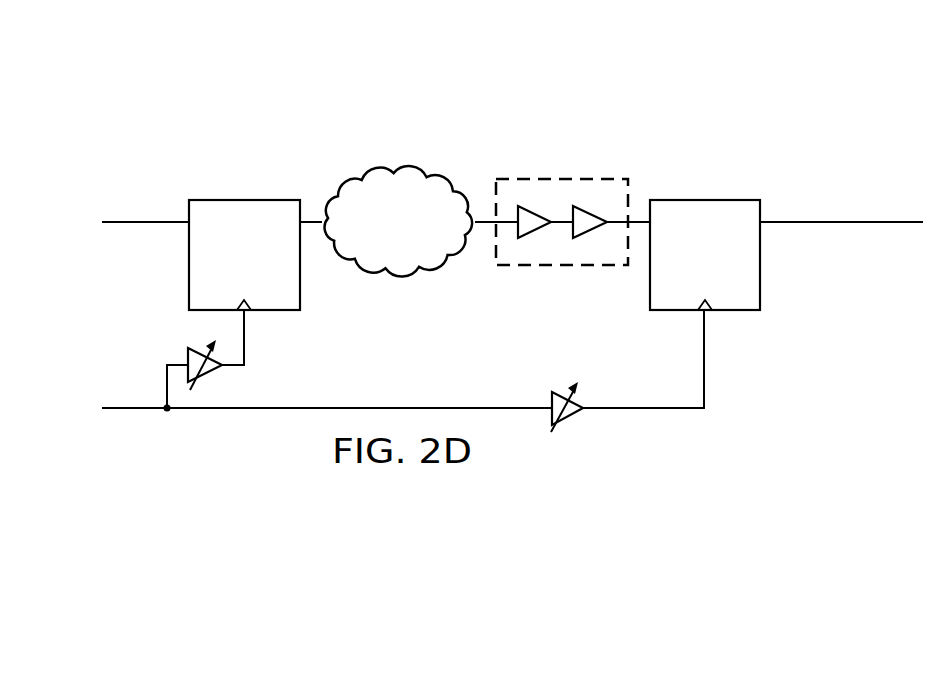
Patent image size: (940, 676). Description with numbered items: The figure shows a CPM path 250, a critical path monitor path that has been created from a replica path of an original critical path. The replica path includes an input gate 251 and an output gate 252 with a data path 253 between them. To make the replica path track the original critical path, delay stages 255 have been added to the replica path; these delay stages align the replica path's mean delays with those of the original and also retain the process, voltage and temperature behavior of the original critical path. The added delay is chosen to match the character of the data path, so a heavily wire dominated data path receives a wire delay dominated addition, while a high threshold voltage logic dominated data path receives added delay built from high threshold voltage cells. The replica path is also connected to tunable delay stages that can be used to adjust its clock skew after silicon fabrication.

The CPM path 250 is at (672, 90).
The input gate 251 is at (245, 199).
The output gate 252 is at (705, 199).
The data path 253 is at (364, 170).
The delay stages 255 is at (577, 179).